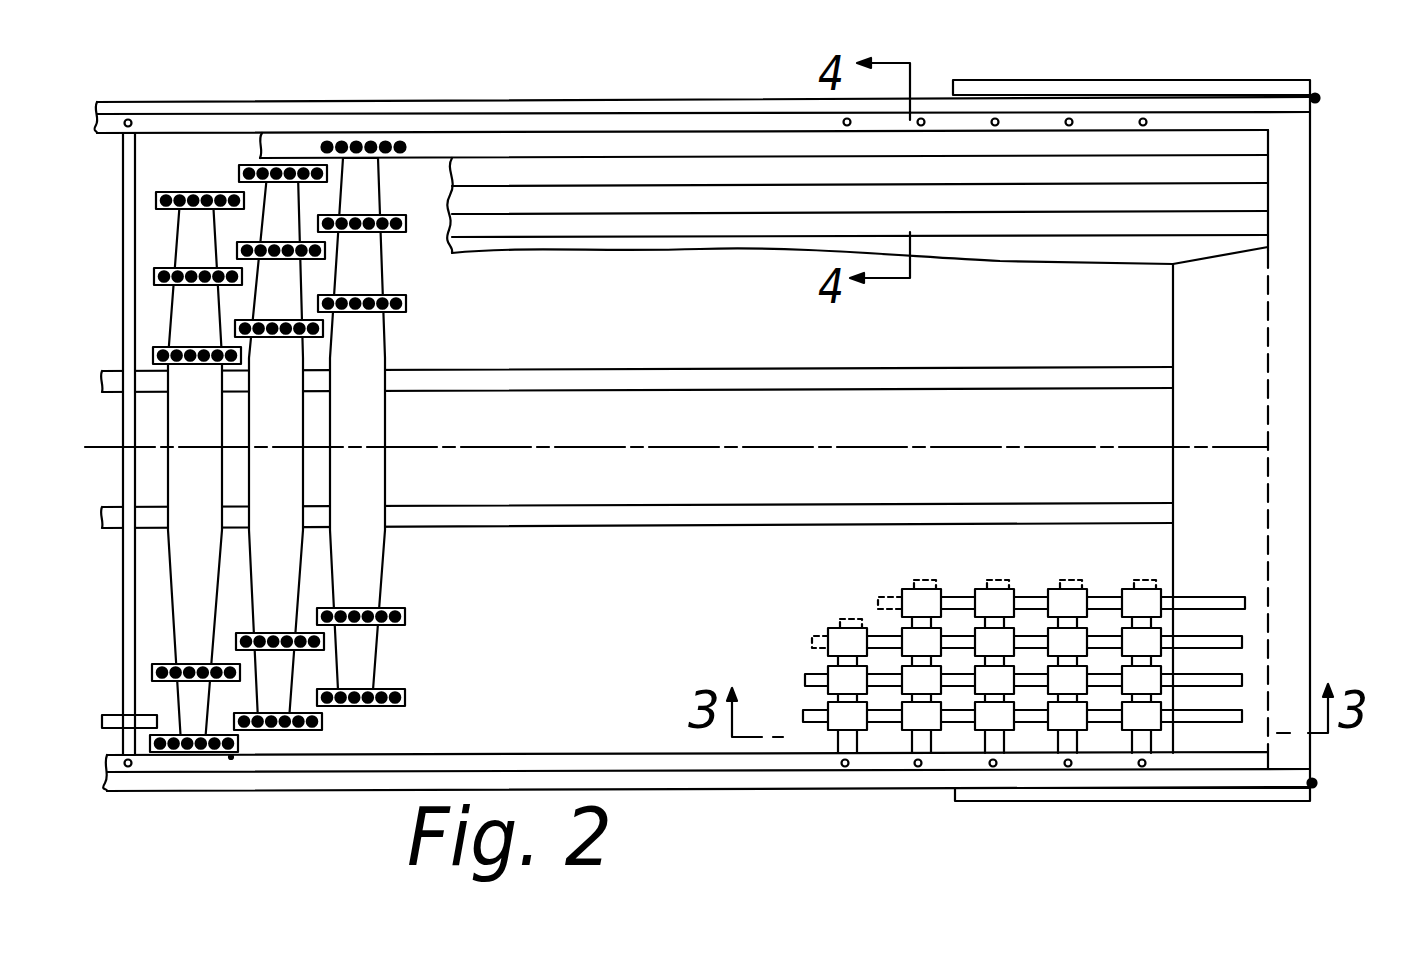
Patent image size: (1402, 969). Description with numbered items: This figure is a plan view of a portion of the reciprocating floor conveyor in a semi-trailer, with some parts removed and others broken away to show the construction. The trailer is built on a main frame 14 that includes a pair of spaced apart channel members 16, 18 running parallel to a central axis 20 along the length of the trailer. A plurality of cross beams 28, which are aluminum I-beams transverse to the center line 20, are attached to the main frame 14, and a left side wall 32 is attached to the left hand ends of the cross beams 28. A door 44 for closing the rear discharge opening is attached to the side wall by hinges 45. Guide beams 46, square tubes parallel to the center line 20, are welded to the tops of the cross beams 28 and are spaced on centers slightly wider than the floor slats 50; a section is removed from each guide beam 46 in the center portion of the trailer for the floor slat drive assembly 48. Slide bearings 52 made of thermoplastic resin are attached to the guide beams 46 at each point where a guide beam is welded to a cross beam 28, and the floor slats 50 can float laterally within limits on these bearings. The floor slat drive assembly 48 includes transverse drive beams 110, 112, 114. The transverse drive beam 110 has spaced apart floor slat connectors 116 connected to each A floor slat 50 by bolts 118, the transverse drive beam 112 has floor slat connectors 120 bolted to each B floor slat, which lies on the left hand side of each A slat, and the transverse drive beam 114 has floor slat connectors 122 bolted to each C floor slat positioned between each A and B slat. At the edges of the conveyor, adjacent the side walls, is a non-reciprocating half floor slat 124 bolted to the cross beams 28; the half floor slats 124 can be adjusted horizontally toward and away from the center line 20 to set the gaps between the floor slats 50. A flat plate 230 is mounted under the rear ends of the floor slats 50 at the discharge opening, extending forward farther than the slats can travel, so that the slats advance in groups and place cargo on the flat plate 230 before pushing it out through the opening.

The main frame 14 is at (1173, 377).
The channel member 16 is at (663, 377).
The channel member 18 is at (725, 517).
The central axis 20 is at (568, 449).
The cross beams 28 is at (837, 742).
The left side wall 32 is at (1128, 777).
The door 44 is at (1206, 797).
The hinges 45 is at (1317, 98).
The guide beams 46 is at (143, 728).
The floor slat drive assembly 48 is at (232, 766).
The floor slats 50 is at (670, 139).
The slide bearings 52 is at (982, 635).
The transverse drive beam 110 is at (377, 344).
The transverse drive beam 112 is at (290, 413).
The transverse drive beam 114 is at (212, 485).
The floor slat connectors 116 is at (405, 692).
The bolts 118 is at (300, 167).
The floor slat connectors 120 is at (327, 725).
The floor slat connectors 122 is at (173, 192).
The half floor slat 124 is at (1265, 122).
The flat plate 230 is at (1263, 280).